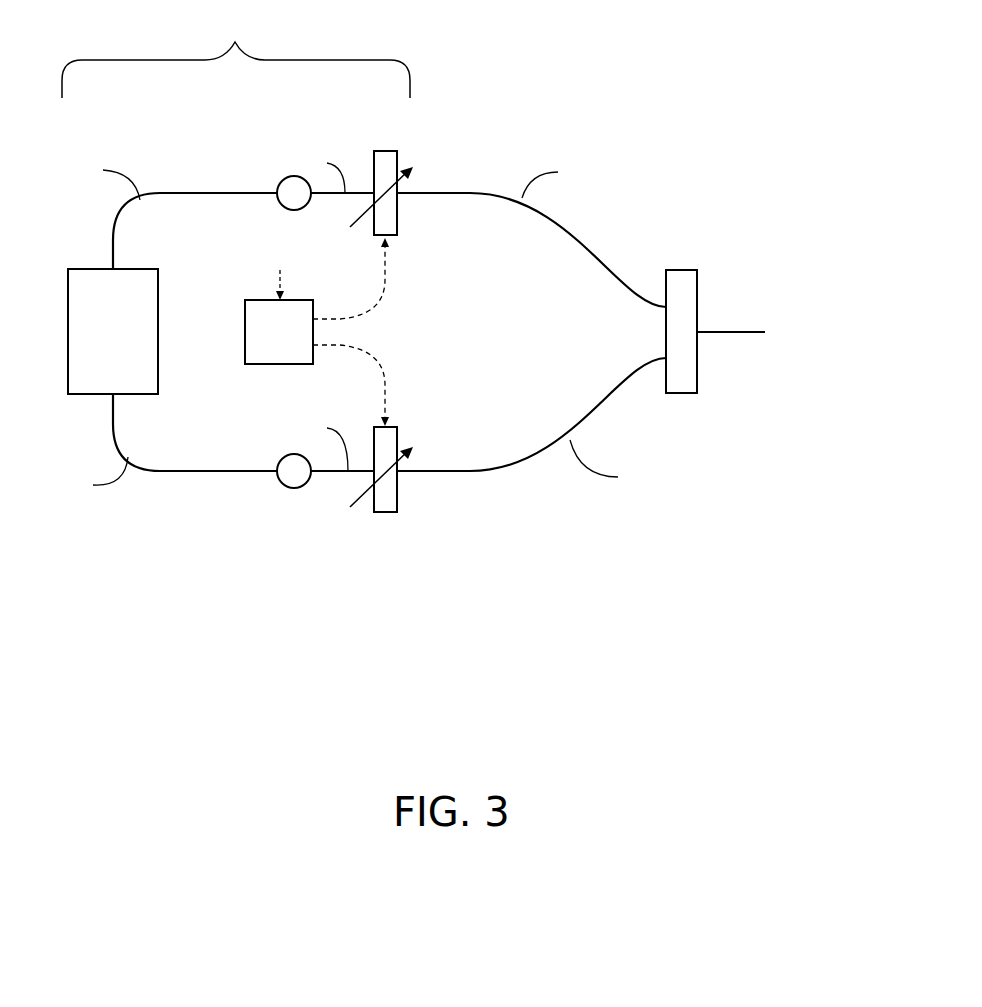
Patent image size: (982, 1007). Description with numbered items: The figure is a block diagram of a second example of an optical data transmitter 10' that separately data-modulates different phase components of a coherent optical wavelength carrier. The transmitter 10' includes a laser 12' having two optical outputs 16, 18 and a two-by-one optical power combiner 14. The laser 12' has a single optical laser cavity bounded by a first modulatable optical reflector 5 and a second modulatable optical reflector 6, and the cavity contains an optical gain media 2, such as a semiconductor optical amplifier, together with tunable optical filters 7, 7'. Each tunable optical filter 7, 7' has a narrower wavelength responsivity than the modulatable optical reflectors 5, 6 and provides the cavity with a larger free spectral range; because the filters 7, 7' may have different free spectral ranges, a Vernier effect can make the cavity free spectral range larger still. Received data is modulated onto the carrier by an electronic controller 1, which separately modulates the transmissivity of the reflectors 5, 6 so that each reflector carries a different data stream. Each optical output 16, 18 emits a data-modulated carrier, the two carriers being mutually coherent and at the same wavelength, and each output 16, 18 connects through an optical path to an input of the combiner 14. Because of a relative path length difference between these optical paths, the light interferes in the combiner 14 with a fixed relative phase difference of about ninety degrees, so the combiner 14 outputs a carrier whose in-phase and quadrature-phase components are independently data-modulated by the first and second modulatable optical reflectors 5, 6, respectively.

The optical data transmitter 10' is at (461, 343).
The laser 12' is at (236, 55).
The electronic controller 1 is at (272, 344).
The optical gain media 2 is at (105, 344).
The first modulatable optical reflector 5 is at (397, 191).
The second modulatable optical reflector 6 is at (405, 500).
The tunable optical filter 7 is at (278, 171).
The tunable optical filter 7' is at (275, 496).
The 2×1 optical power combiner 14 is at (680, 270).
The optical output 16 is at (397, 196).
The optical output 18 is at (397, 478).